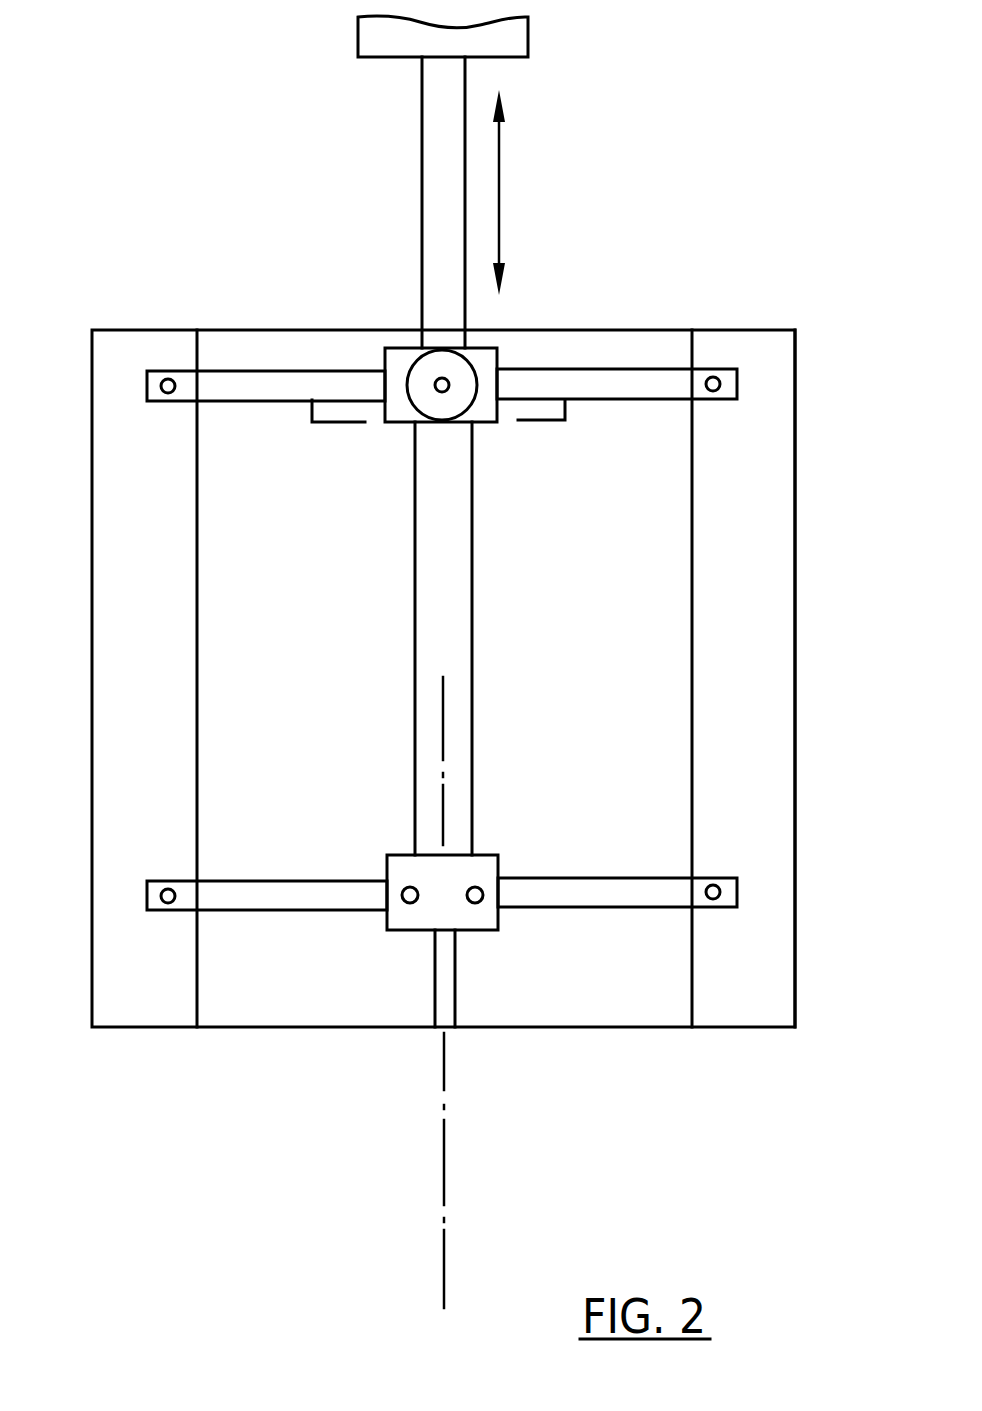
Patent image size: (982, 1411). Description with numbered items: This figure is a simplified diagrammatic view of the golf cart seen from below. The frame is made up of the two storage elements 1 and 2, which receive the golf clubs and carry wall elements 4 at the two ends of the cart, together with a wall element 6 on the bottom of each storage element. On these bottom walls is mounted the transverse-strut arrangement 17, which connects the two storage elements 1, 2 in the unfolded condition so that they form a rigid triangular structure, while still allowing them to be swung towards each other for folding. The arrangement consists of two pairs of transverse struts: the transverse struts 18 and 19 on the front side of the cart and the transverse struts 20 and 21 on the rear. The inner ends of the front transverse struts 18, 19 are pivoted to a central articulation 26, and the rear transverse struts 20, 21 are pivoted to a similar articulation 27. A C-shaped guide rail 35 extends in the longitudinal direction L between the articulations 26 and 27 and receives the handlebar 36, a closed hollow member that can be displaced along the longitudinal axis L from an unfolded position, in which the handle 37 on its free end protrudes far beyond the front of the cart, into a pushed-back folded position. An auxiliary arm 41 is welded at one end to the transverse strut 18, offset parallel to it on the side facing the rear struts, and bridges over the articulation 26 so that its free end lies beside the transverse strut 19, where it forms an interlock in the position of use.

The storage element 1 is at (112, 633).
The storage element 2 is at (795, 548).
The wall element 4 is at (489, 681).
The wall element 6 is at (162, 713).
The transverse-strut arrangement 17 is at (572, 298).
The transverse strut 18 is at (266, 411).
The transverse strut 19 is at (617, 408).
The transverse strut 20 is at (267, 924).
The transverse strut 21 is at (617, 871).
The articulation 26 is at (409, 412).
The articulation 27 is at (473, 919).
The guide rail 35 is at (450, 617).
The handlebar 36 is at (435, 188).
The handle 37 is at (513, 35).
The auxiliary arm 41 is at (438, 437).
The longitudinal direction L is at (444, 1168).